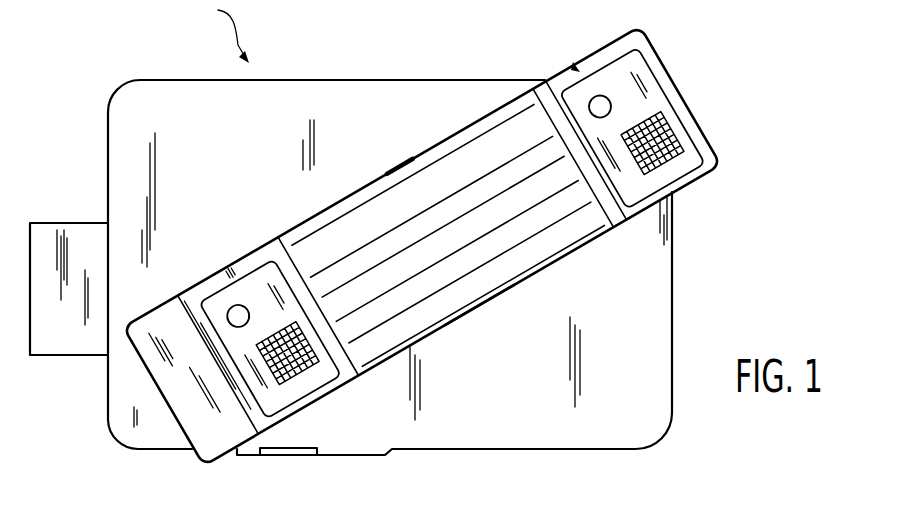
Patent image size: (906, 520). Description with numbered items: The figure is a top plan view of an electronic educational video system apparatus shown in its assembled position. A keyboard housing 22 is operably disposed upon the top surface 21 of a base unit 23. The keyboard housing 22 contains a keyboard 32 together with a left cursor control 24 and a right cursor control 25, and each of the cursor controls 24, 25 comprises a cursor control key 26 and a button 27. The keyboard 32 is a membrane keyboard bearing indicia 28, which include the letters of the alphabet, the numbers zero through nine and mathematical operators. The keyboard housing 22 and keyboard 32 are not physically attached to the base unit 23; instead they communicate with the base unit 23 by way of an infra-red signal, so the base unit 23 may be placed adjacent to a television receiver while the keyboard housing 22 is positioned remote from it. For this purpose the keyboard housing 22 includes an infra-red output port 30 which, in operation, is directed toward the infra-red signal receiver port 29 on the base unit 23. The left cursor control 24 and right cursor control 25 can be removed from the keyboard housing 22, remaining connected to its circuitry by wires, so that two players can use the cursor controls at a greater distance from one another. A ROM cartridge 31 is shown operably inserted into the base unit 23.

The top surface 21 is at (307, 97).
The keyboard housing 22 is at (586, 57).
The base unit 23 is at (143, 80).
The left cursor control 24 is at (277, 400).
The right cursor control 25 is at (688, 165).
The cursor control key 26 is at (660, 140).
The button 27 is at (612, 105).
The indicia 28 is at (521, 267).
The infra-red signal receiver port 29 is at (305, 456).
The infra-red output port 30 is at (400, 155).
The ROM cartridge 31 is at (58, 232).
The keyboard 32 is at (487, 310).